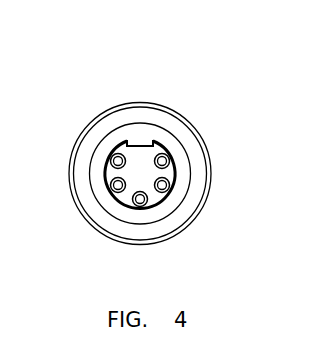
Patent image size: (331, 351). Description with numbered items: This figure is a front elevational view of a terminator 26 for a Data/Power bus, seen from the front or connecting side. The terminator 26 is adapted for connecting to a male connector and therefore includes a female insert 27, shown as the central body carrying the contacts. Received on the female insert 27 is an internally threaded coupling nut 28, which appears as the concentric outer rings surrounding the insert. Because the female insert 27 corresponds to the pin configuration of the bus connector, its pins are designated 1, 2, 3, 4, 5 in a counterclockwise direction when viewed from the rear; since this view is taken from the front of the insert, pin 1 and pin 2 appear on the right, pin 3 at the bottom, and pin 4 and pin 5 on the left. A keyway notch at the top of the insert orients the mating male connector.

The pin 1 is at (200, 126).
The pin 2 is at (197, 221).
The pin 3 is at (107, 237).
The pin 4 is at (81, 217).
The pin 5 is at (84, 125).
The terminator 26 is at (145, 85).
The female insert 27 is at (112, 176).
The coupling nut 28 is at (191, 174).